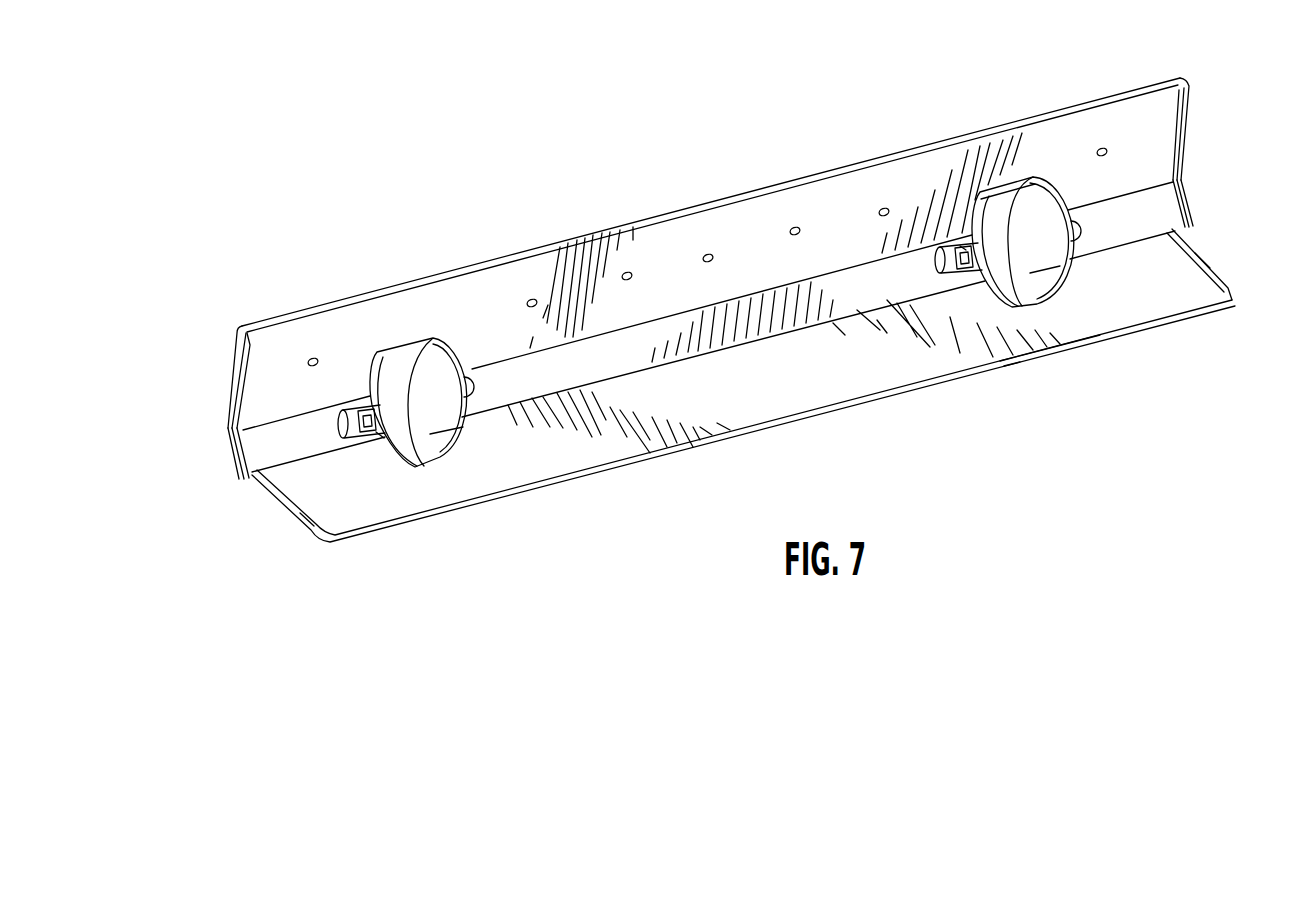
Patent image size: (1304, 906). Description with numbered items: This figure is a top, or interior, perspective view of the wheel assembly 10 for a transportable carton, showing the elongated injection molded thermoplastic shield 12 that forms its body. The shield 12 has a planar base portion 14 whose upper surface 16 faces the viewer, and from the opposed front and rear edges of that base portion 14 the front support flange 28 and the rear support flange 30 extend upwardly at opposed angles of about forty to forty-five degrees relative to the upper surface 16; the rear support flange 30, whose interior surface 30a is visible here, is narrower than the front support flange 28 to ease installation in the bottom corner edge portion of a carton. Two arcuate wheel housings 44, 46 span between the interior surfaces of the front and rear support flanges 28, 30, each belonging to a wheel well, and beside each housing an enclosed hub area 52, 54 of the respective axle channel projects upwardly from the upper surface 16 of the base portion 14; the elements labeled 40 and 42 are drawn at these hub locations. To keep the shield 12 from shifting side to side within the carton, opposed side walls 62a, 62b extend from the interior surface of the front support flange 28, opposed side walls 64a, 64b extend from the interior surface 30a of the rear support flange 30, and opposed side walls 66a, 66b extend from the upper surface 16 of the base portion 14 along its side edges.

The wheel assembly 10 is at (789, 103).
The shield 12 is at (819, 167).
The base portion 14 is at (578, 368).
The upper surface 16 is at (733, 330).
The front support flange 28 is at (511, 278).
The rear support flange 30 is at (1045, 353).
The interior surface of rear support flange 30a is at (890, 367).
The first axle assembly 40 is at (375, 435).
The second axle assembly 42 is at (963, 250).
The arcuate wheel housing 44 is at (418, 356).
The arcuate wheel housing 46 is at (1038, 205).
The enclosed hub area 52 is at (340, 423).
The enclosed hub area 54 is at (940, 268).
The side wall 62a is at (1190, 128).
The side wall 62b is at (238, 362).
The side wall 64a is at (1210, 264).
The side wall 64b is at (300, 511).
The side wall 66a is at (1188, 203).
The side wall 66b is at (230, 440).